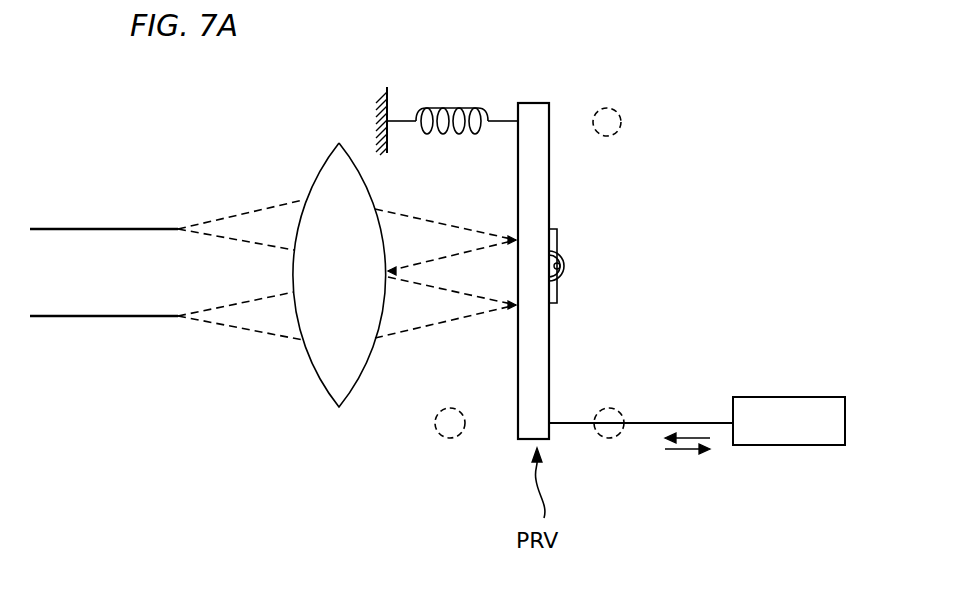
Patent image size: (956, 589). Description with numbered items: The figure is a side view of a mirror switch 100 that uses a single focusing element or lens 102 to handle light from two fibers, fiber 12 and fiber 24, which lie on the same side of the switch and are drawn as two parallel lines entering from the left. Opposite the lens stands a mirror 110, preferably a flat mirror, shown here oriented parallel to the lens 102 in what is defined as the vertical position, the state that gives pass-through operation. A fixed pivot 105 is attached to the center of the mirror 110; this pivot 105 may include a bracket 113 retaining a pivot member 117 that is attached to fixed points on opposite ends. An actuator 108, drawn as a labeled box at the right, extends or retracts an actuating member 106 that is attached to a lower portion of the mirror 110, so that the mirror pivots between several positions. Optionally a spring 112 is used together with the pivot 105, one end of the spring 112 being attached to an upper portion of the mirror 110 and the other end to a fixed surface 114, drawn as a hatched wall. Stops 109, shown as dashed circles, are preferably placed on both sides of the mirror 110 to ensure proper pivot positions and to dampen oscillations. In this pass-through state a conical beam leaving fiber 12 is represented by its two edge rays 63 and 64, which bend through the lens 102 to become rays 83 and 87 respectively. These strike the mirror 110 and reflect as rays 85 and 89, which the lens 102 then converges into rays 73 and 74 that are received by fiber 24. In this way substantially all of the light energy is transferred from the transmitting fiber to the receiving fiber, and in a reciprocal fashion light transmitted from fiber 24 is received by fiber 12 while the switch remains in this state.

The fiber 12 is at (77, 228).
The fiber 24 is at (105, 318).
The edge ray 63 is at (272, 200).
The edge ray 64 is at (222, 240).
The ray 73 is at (252, 296).
The ray 74 is at (254, 333).
The ray 83 is at (392, 212).
The ray 85 is at (453, 253).
The ray 87 is at (468, 291).
The ray 89 is at (404, 332).
The mirror switch 100 is at (674, 116).
The focusing element 102 is at (339, 275).
The fixed pivot 105 is at (570, 287).
The actuating member 106 is at (655, 421).
The actuator 108 is at (768, 397).
The stops 109 is at (607, 108).
The mirror 110 is at (544, 388).
The spring 112 is at (474, 108).
The bracket 113 is at (558, 236).
The fixed surface 114 is at (390, 88).
The pivot member 117 is at (575, 267).